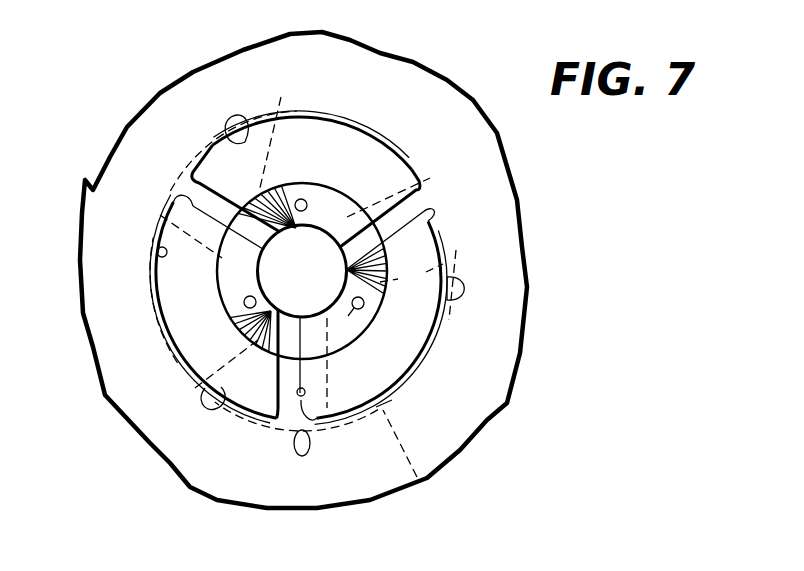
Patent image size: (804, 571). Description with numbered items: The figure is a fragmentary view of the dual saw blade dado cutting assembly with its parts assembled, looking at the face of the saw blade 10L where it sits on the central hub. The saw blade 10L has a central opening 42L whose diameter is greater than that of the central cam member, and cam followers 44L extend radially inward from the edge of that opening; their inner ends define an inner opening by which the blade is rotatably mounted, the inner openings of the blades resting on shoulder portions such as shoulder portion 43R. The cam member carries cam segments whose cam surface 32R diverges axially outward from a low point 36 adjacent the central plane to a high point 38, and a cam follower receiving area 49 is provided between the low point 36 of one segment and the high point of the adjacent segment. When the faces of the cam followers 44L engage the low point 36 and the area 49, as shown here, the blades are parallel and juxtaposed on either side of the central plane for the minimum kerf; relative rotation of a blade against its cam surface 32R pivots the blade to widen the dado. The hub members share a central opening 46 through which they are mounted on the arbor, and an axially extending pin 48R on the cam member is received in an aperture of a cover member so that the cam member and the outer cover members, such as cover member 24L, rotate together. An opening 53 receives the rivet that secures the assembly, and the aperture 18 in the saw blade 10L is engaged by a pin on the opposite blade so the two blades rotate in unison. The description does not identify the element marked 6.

The circular saw blade 10L is at (403, 83).
The central opening 46 is at (338, 262).
The shoulder portion 43R is at (352, 128).
The cam surface 32R is at (405, 138).
The low point 36 is at (188, 182).
The high point 38 is at (410, 175).
The cam follower receiving area 49 is at (441, 202).
The cam follower 44L is at (183, 392).
The axially extending pin 48R is at (301, 199).
The opening 53 is at (244, 303).
The central opening 42L is at (165, 262).
The line 6 is at (411, 278).
The aperture 18 is at (294, 456).
The outer cover member 24L is at (420, 480).